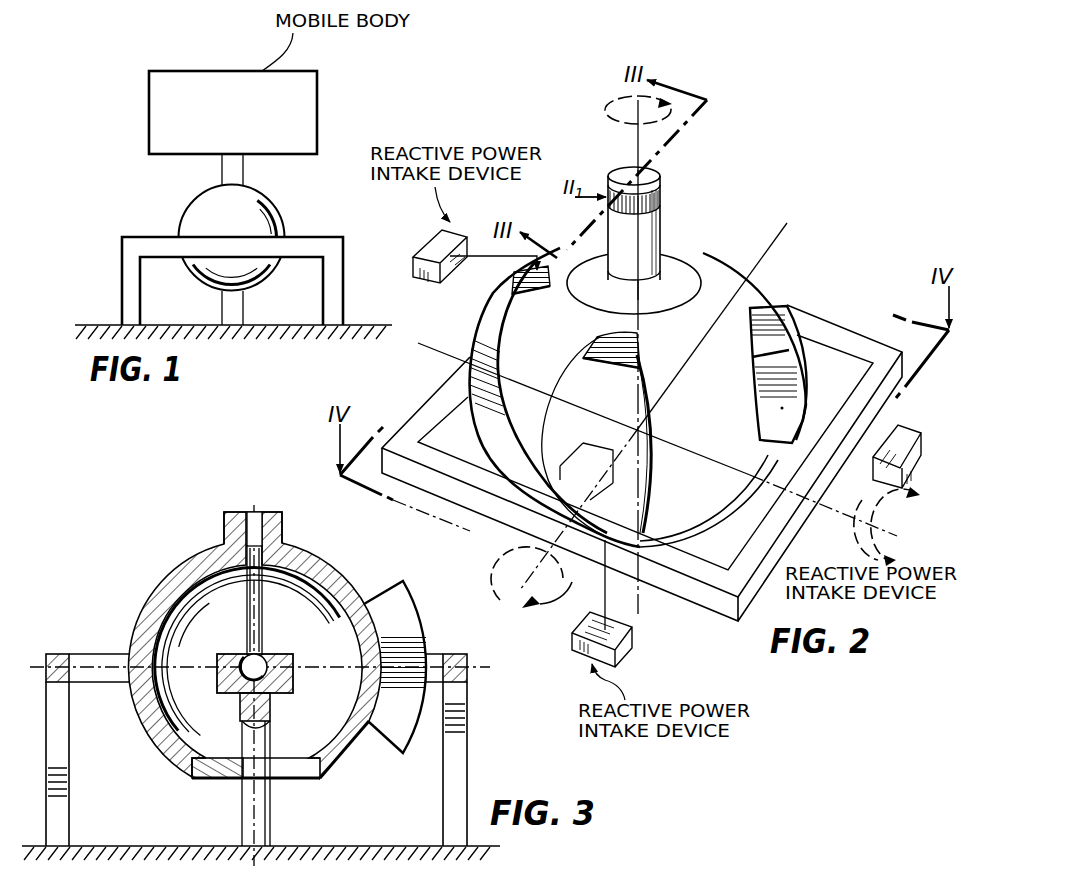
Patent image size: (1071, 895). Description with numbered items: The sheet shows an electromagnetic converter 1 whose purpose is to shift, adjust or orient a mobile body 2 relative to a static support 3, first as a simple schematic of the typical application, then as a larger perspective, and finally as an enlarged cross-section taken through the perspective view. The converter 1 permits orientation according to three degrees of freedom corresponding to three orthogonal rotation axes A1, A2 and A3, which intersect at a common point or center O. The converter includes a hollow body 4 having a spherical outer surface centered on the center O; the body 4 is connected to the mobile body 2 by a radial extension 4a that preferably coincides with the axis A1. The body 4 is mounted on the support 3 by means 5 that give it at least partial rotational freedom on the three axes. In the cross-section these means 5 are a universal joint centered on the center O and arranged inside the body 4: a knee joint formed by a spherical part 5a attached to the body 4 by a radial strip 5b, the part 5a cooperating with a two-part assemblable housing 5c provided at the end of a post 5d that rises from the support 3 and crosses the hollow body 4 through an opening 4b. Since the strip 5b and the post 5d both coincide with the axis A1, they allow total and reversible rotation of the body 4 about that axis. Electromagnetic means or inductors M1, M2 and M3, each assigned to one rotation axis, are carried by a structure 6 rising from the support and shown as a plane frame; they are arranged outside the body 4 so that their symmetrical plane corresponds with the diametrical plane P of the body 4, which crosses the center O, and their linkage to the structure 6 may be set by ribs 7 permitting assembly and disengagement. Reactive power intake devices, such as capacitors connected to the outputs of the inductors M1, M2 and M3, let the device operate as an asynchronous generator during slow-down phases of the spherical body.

In FIG. 1, the electromagnetic converter 1 is at (305, 210).
In FIG. 3, the electromagnetic converter 1 is at (146, 566).
In FIG. 2, the electromagnetic converter 1 is at (723, 237).
In FIG. 1, the mobile body 2 is at (318, 112).
In FIG. 1, the static support 3 is at (98, 325).
In FIG. 3, the static support 3 is at (104, 846).
In FIG. 3, the body 4 is at (137, 625).
In FIG. 2, the body 4 is at (717, 500).
In FIG. 3, the radial extension 4a is at (225, 522).
In FIG. 2, the radial extension 4a is at (661, 217).
In FIG. 3, the opening 4b is at (212, 780).
In FIG. 3, the means 5 is at (212, 676).
In FIG. 3, the spherical part 5a is at (242, 654).
In FIG. 3, the radial strip 5b is at (262, 618).
In FIG. 3, the housing 5c is at (272, 700).
In FIG. 3, the post 5d is at (265, 746).
In FIG. 1, the structure 6 is at (333, 272).
In FIG. 3, the structure 6 is at (62, 654).
In FIG. 2, the structure 6 is at (832, 336).
In FIG. 3, the ribs 7 is at (432, 653).
In FIG. 2, the ribs 7 is at (607, 490).
In FIG. 3, the electromagnetic means M1 is at (387, 607).
In FIG. 2, the electromagnetic means M1 is at (758, 300).
In FIG. 2, the electromagnetic means M2 is at (652, 342).
In FIG. 2, the electromagnetic means M3 is at (512, 276).
In FIG. 3, the rotation axis A1 is at (256, 826).
In FIG. 2, the rotation axis A1 is at (636, 146).
In FIG. 2, the rotation axis A2 is at (864, 518).
In FIG. 3, the rotation axis A3 is at (118, 684).
In FIG. 2, the rotation axis A3 is at (530, 566).
In FIG. 3, the center O is at (262, 656).
In FIG. 2, the center O is at (645, 436).
In FIG. 2, the diametrical plane P is at (534, 394).